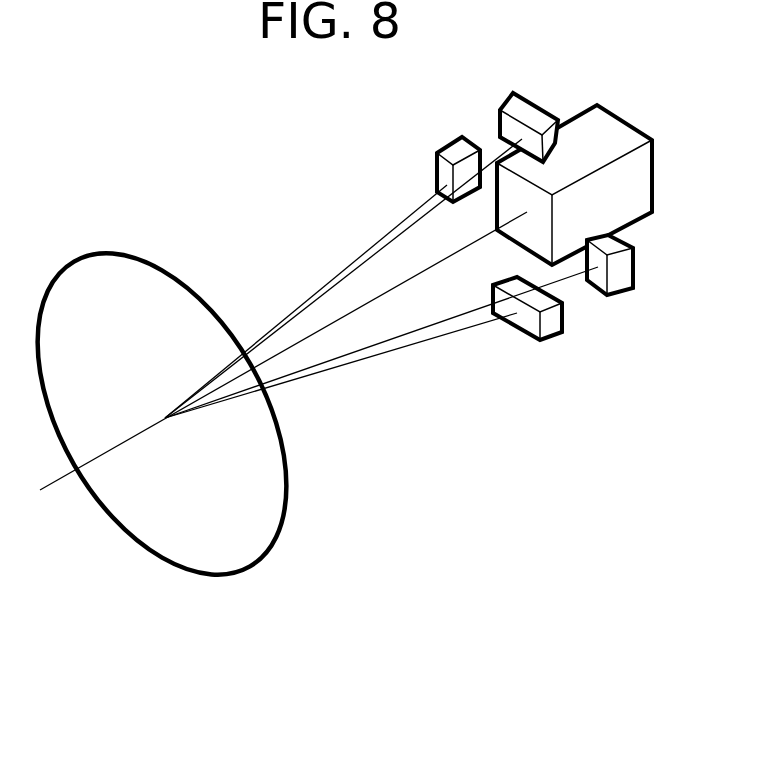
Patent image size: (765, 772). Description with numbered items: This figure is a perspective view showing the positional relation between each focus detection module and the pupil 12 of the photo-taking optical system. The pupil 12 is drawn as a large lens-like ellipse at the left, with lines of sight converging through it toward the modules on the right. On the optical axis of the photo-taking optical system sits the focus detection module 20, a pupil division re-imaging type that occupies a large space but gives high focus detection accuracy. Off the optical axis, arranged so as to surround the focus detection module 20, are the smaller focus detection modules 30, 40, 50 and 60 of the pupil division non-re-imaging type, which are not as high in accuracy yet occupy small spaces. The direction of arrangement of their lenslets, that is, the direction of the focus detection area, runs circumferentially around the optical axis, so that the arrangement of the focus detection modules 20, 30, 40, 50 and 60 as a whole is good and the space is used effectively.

The pupil 12 is at (287, 505).
The focus detection module 20 is at (627, 124).
The focus detection module 30 is at (443, 151).
The focus detection module 40 is at (623, 292).
The focus detection module 50 is at (538, 104).
The focus detection module 60 is at (552, 337).